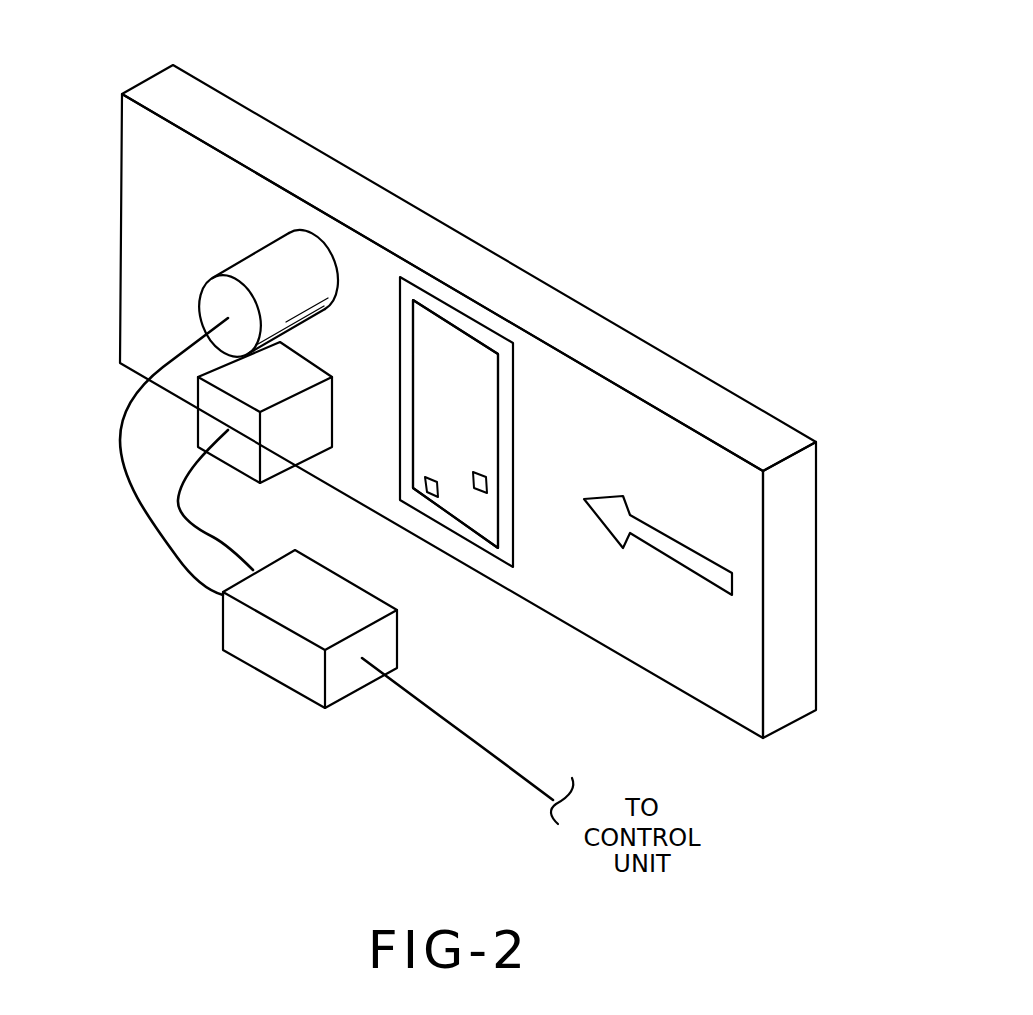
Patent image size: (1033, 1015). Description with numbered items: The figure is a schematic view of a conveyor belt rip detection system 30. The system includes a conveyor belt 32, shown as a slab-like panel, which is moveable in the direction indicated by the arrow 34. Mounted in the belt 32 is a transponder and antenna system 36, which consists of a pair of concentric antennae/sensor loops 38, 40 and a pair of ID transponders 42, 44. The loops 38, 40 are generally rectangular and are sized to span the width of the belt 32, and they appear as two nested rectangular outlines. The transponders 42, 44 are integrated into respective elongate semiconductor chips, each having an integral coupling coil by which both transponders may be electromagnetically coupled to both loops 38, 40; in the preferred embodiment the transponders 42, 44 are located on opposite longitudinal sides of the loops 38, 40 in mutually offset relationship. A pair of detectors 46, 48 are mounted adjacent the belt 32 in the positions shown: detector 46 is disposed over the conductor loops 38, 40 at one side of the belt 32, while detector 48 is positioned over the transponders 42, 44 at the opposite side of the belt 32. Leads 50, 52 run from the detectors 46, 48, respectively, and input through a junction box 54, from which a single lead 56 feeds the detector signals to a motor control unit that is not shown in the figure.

The sensor assembly 30 is at (613, 120).
The conveyor belt 32 is at (672, 373).
The direction of belt movement 34 is at (695, 553).
The transponder and antenna system 36 is at (438, 307).
The antenna/sensor loop 38 is at (493, 332).
The antenna/sensor loop 40 is at (502, 407).
The ID transponder 42 is at (430, 487).
The ID transponder 44 is at (482, 482).
The detector 46 is at (212, 300).
The detector 48 is at (303, 412).
The lead 50 is at (123, 418).
The lead 52 is at (208, 530).
The junction box 54 is at (282, 658).
The lead 56 is at (457, 732).